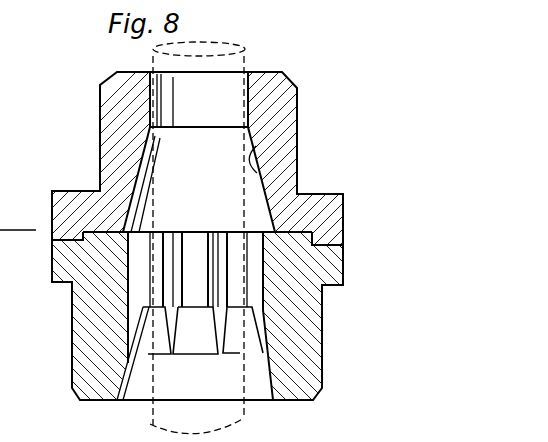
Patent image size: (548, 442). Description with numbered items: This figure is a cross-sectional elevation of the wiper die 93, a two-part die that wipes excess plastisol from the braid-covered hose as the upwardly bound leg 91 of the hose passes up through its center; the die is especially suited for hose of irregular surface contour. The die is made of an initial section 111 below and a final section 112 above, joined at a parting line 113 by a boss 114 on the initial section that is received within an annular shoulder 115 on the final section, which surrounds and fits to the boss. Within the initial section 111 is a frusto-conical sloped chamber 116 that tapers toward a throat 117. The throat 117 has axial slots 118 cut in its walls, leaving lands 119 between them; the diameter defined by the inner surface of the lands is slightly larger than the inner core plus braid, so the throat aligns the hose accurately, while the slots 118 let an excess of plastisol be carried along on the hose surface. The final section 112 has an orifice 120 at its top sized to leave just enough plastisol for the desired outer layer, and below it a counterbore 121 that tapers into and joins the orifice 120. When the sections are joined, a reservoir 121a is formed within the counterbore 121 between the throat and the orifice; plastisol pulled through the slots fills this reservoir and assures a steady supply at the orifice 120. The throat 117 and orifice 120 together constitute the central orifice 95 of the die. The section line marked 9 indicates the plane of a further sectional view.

The wiper die 93 is at (303, 164).
The central orifice 95 is at (162, 86).
The orifice 120 is at (223, 113).
The counterbore 121 is at (256, 147).
The reservoir 121a is at (176, 184).
The final section 112 is at (297, 188).
The boss 114 is at (313, 234).
The parting line 113 is at (340, 244).
The section line 9 is at (377, 263).
The lands 119 is at (200, 238).
The annular shoulder 115 is at (69, 242).
The throat 117 is at (257, 299).
The axial slots 118 is at (223, 356).
The initial section 111 is at (323, 353).
The frusto-conical sloped chamber 116 is at (132, 383).
The upwardly bound leg 91 is at (215, 416).